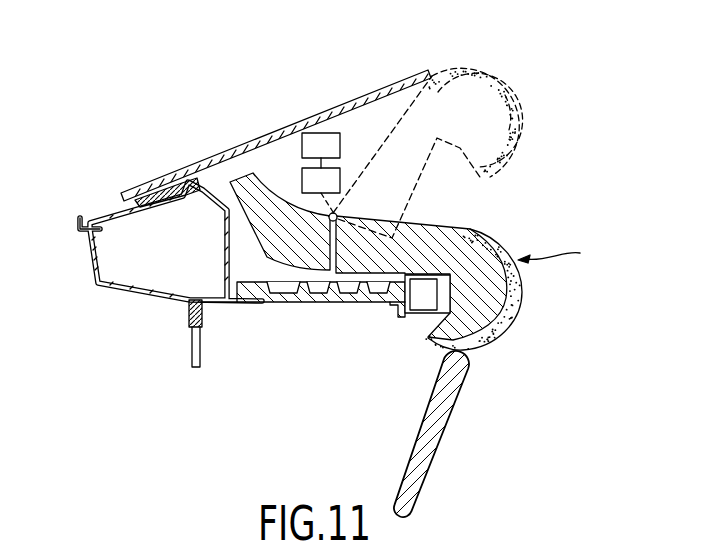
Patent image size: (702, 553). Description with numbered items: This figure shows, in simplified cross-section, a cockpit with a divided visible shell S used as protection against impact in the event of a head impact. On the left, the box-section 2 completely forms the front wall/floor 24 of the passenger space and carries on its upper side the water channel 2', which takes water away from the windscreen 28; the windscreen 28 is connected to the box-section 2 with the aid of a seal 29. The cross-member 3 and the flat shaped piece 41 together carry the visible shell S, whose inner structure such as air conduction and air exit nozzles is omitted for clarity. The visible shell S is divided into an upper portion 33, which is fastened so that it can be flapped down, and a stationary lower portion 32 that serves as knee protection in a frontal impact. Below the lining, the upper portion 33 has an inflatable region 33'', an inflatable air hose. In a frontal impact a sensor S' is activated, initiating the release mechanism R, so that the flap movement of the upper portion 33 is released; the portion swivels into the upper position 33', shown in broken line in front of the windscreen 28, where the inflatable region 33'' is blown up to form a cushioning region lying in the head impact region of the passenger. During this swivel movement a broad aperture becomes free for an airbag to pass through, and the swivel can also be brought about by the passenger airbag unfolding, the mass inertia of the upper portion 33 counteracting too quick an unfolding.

The box-section 2 is at (171, 259).
The water channel 2' is at (88, 198).
The cross-member 3 is at (420, 304).
The front wall/floor 24 is at (188, 352).
The windscreen 28 is at (394, 78).
The seal 29 is at (177, 196).
The stationary lower portion 32 is at (447, 428).
The upper portion 33 is at (506, 289).
The upper position of the upper portion 33' is at (548, 106).
The inflatable region 33'' is at (492, 106).
The flat shaped piece 41 is at (267, 295).
The visible shell S is at (561, 245).
The sensor S' is at (321, 145).
The release mechanism R is at (321, 185).